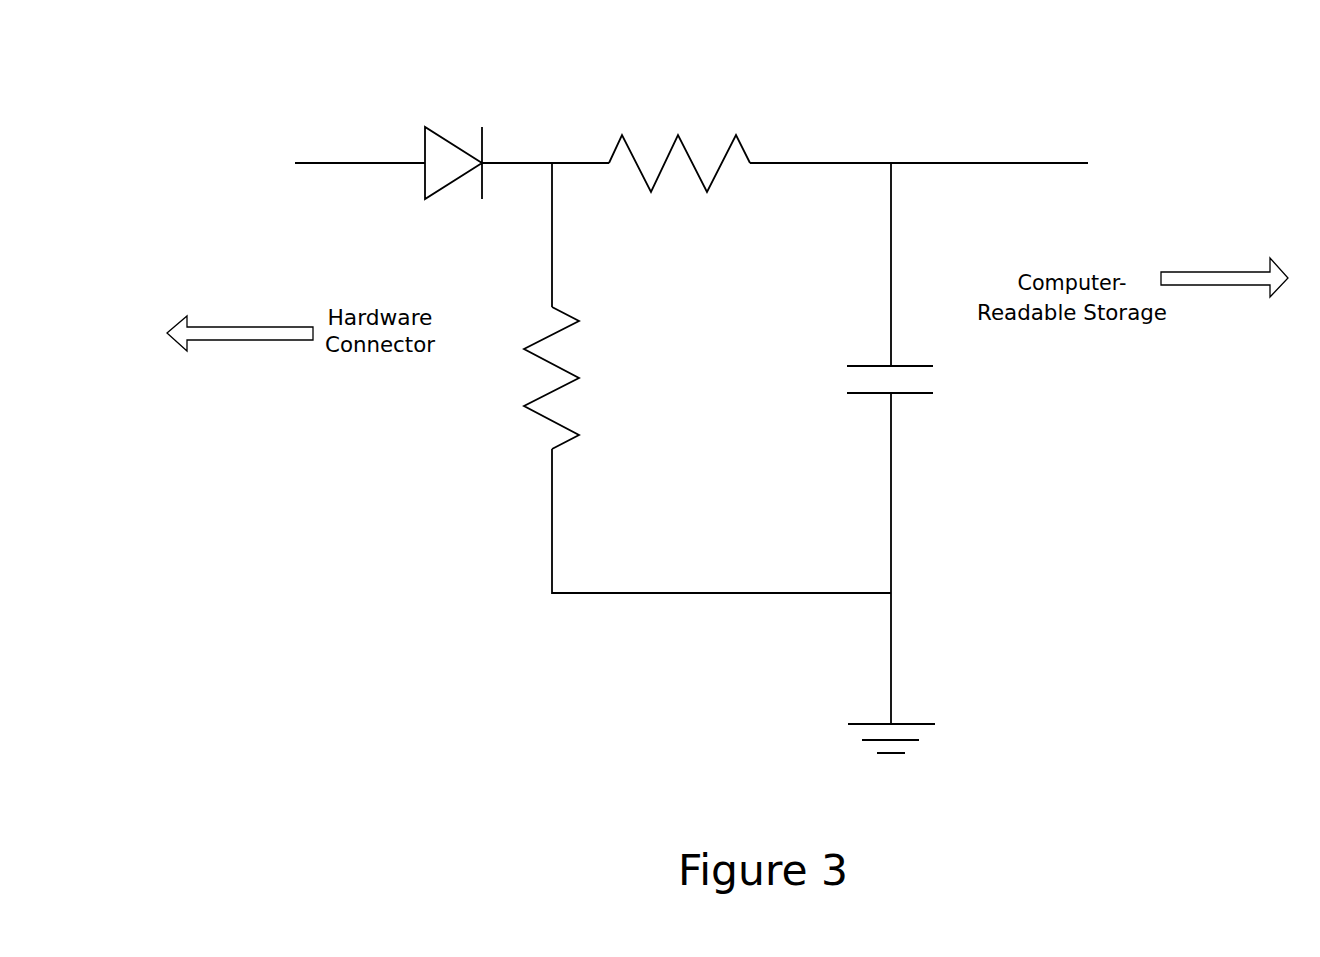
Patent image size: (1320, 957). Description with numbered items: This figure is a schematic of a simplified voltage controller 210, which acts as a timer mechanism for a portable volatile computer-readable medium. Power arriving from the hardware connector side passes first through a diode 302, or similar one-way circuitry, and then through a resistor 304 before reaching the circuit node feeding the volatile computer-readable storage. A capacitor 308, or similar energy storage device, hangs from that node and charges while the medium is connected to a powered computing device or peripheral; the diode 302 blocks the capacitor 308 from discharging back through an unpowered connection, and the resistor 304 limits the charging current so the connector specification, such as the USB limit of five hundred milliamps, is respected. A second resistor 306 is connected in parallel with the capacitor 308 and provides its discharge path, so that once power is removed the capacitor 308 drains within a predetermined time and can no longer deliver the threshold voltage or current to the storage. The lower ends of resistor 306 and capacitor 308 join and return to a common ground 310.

The voltage controller 210 is at (1145, 102).
The diode 302 is at (450, 140).
The resistor 304 is at (678, 135).
The resistor 306 is at (579, 378).
The capacitor 308 is at (933, 377).
The ground 310 is at (914, 724).